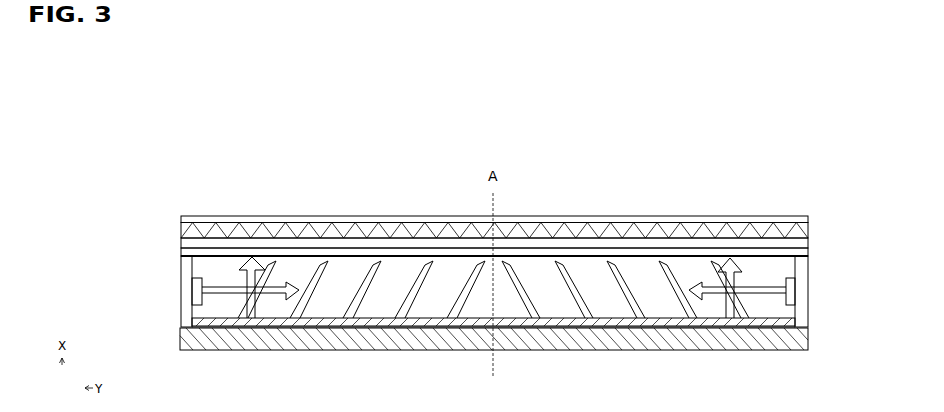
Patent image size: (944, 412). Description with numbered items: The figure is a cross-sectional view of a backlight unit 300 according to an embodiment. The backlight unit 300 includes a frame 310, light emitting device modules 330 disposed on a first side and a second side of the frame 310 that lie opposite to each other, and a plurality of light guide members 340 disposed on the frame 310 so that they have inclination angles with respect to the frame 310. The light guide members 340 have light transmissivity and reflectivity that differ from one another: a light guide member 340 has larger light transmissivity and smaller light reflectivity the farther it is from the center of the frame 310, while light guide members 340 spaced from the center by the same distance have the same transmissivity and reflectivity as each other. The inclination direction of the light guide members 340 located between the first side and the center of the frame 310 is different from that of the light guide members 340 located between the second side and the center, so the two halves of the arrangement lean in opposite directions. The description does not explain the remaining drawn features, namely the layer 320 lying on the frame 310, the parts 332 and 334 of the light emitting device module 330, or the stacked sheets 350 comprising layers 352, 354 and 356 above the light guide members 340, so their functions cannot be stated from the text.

The backlight unit 300 is at (116, 124).
The frame 310 is at (208, 342).
The reflective sheet 320 is at (203, 320).
The light emitting device module 330 is at (890, 270).
The side wall of frame 332 is at (795, 308).
The light source 334 is at (790, 287).
The light guide member 340 is at (577, 285).
The optical sheet 350 is at (95, 183).
The diffusion sheet 352 is at (181, 256).
The prism sheet 354 is at (181, 237).
The protective sheet 356 is at (181, 219).